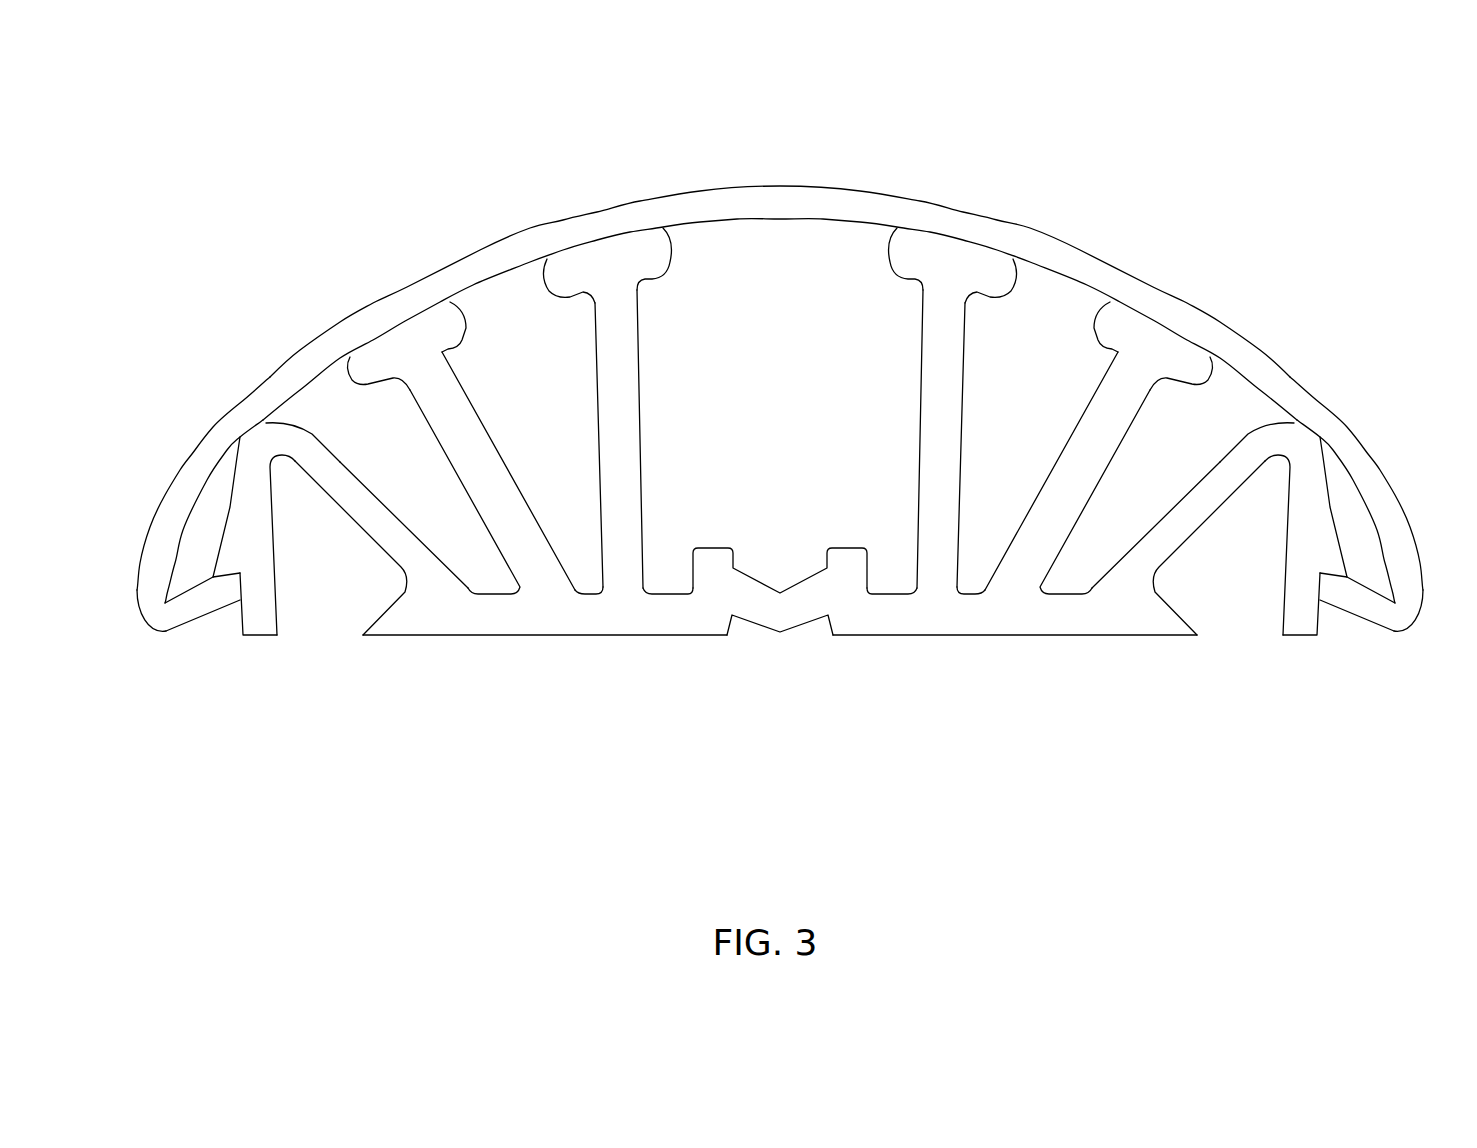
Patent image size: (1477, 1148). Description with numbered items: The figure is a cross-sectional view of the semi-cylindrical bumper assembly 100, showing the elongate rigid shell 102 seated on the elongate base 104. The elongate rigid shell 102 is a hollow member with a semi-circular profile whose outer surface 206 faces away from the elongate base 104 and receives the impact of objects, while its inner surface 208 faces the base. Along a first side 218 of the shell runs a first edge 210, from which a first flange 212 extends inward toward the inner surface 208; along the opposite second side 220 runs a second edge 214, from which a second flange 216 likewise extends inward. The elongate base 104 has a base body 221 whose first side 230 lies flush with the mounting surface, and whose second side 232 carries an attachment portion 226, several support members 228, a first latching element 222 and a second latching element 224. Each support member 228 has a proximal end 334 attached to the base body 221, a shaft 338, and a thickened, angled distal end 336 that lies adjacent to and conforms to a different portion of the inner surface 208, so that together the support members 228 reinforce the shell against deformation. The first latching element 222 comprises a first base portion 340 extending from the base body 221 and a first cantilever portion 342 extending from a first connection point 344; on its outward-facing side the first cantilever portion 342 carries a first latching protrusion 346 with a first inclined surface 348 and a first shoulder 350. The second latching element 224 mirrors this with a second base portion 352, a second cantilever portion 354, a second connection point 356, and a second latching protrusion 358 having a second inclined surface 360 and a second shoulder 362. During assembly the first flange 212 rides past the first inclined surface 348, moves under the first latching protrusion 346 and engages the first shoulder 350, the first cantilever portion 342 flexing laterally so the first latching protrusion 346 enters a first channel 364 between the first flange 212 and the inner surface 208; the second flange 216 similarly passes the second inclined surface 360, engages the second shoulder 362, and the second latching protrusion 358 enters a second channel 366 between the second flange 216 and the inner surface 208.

The bumper assembly 100 is at (716, 758).
The elongate rigid shell 102 is at (768, 187).
The elongate base 104 is at (570, 637).
The outer surface 206 is at (1094, 254).
The inner surface 208 is at (728, 222).
The first edge 210 is at (145, 626).
The first flange 212 is at (199, 607).
The second edge 214 is at (1412, 626).
The second flange 216 is at (1352, 610).
The first side 218 is at (176, 385).
The second side 220 is at (1386, 385).
The base body 221 is at (890, 622).
The first latching element 222 is at (311, 700).
The second latching element 224 is at (1188, 678).
The attachment portion 226 is at (777, 629).
The support members 228 is at (640, 400).
The first side 230 is at (617, 635).
The second side 232 is at (897, 590).
The proximal end 334 is at (570, 577).
The distal end 336 is at (440, 330).
The shaft 338 is at (478, 470).
The first base portion 340 is at (377, 500).
The first cantilever portion 342 is at (259, 612).
The first connection point 344 is at (288, 432).
The first latching protrusion 346 is at (230, 547).
The first inclined surface 348 is at (230, 520).
The first shoulder 350 is at (232, 571).
The second base portion 352 is at (1180, 497).
The second cantilever portion 354 is at (1300, 620).
The second connection point 356 is at (1285, 442).
The second latching protrusion 358 is at (1310, 550).
The second inclined surface 360 is at (1330, 520).
The second shoulder 362 is at (1347, 560).
The first channel 364 is at (188, 573).
The second channel 366 is at (1362, 567).